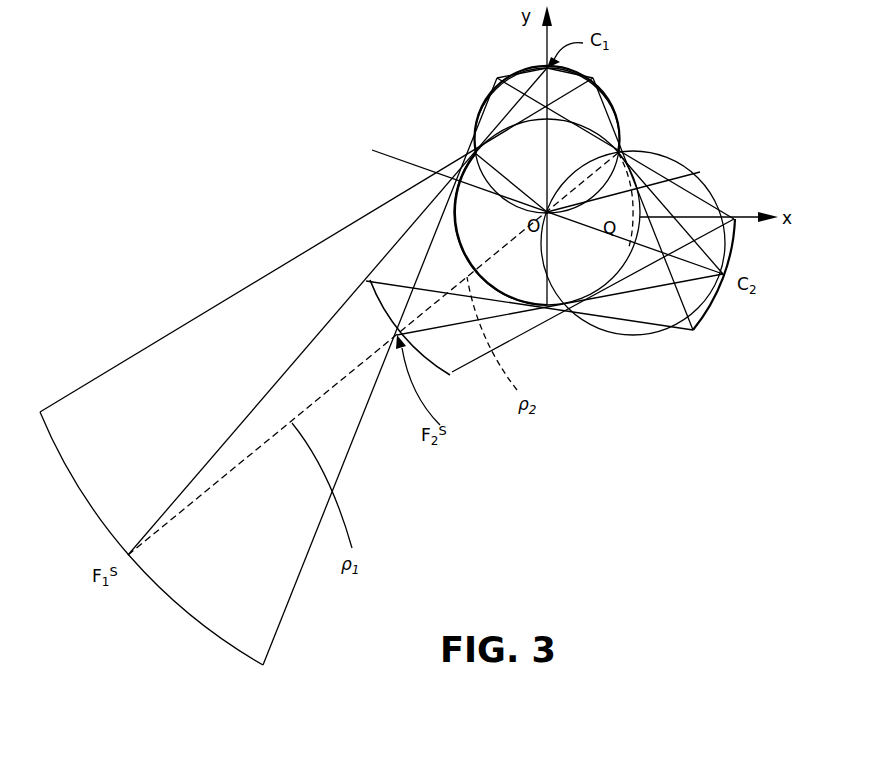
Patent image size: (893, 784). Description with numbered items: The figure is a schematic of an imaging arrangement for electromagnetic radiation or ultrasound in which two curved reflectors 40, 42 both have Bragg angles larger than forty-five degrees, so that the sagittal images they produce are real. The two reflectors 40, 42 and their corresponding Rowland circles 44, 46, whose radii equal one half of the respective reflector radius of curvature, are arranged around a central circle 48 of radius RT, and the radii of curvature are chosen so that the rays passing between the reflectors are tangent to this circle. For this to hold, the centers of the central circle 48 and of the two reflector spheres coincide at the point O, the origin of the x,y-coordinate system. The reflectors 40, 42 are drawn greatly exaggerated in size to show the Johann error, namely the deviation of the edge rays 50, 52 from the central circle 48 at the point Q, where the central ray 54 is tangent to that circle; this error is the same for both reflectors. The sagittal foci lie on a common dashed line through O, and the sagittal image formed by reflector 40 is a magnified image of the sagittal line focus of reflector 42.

The reflector 40 is at (512, 72).
The reflector 42 is at (735, 237).
The Rowland circle 44 is at (76, 490).
The Rowland circle 46 is at (370, 310).
The central circle 48 is at (452, 240).
The edge ray 50 is at (612, 118).
The edge ray 52 is at (650, 155).
The central ray 54 is at (662, 202).